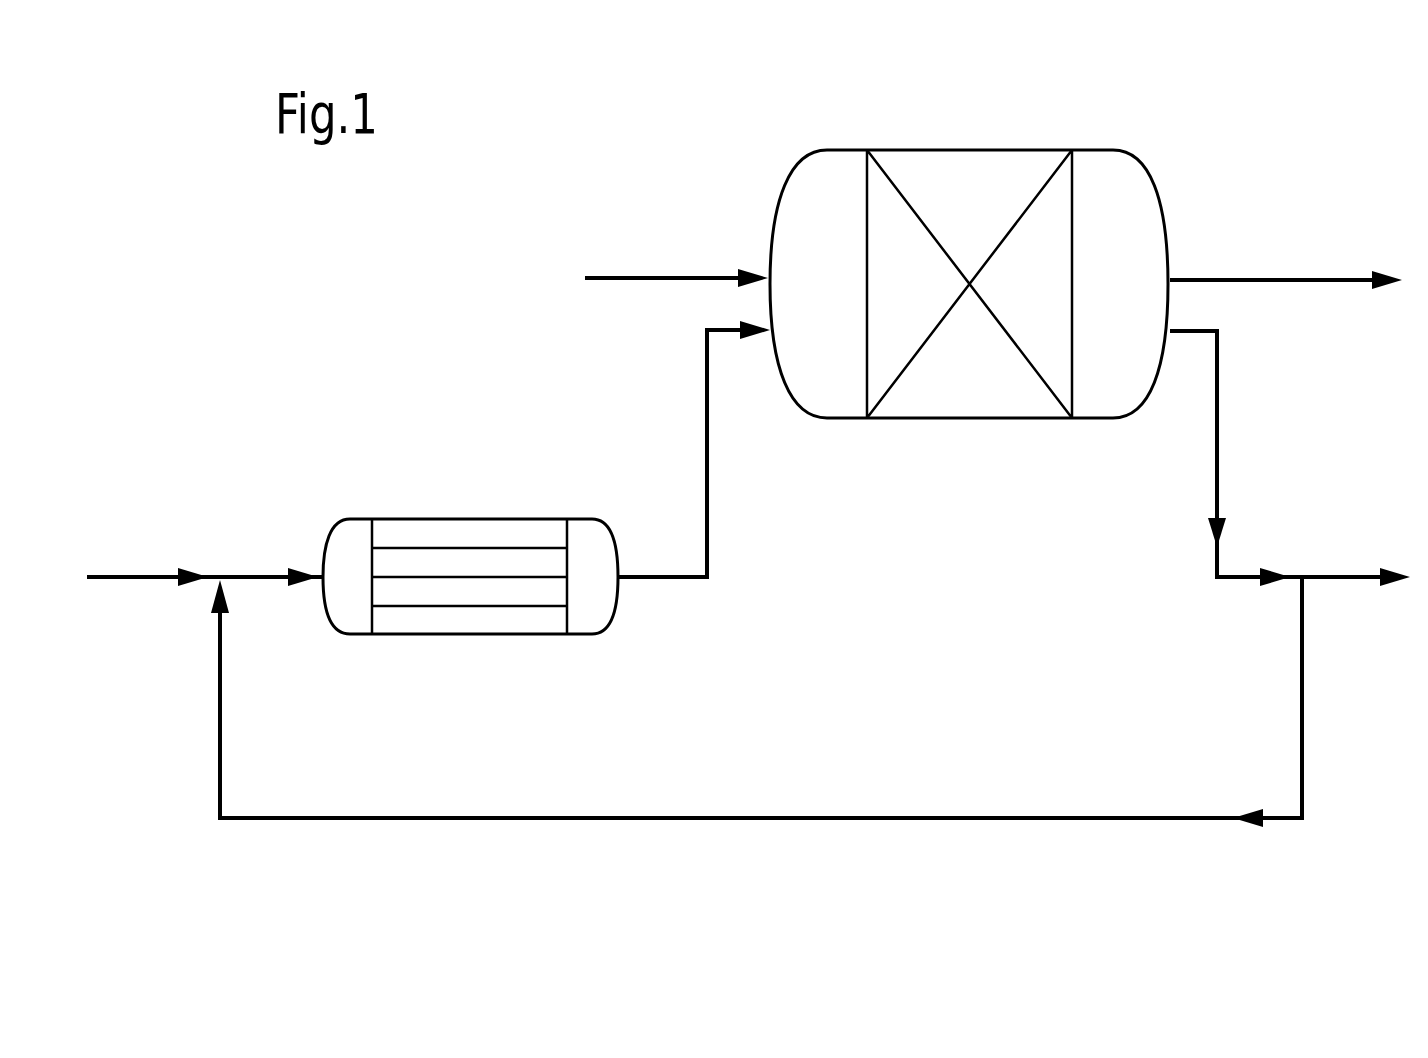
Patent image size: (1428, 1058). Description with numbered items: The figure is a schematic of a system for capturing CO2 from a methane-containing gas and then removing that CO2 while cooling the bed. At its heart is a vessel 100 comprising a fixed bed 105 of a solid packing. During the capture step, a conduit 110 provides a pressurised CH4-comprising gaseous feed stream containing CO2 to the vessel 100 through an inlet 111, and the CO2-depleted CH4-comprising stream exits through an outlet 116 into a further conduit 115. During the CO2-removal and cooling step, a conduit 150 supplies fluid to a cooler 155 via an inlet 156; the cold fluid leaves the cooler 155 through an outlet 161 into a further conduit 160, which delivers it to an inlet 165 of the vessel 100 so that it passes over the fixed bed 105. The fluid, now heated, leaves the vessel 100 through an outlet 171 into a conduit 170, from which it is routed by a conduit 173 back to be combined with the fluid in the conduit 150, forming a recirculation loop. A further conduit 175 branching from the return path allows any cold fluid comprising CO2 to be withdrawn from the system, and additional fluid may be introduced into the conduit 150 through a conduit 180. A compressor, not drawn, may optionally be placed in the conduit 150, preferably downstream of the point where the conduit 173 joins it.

The vessel 100 is at (830, 147).
The fixed bed 105 is at (988, 183).
The conduit 110 is at (617, 273).
The inlet 111 is at (767, 270).
The further conduit 115 is at (1317, 278).
The outlet 116 is at (1172, 278).
The conduit 150 is at (257, 572).
The cooler 155 is at (448, 518).
The inlet 156 is at (318, 580).
The further conduit 160 is at (710, 535).
The outlet 161 is at (622, 573).
The inlet 165 is at (770, 335).
The conduit 170 is at (1218, 453).
The outlet 171 is at (1172, 333).
The conduit 173 is at (998, 815).
The further conduit 175 is at (1347, 573).
The conduit 180 is at (143, 575).